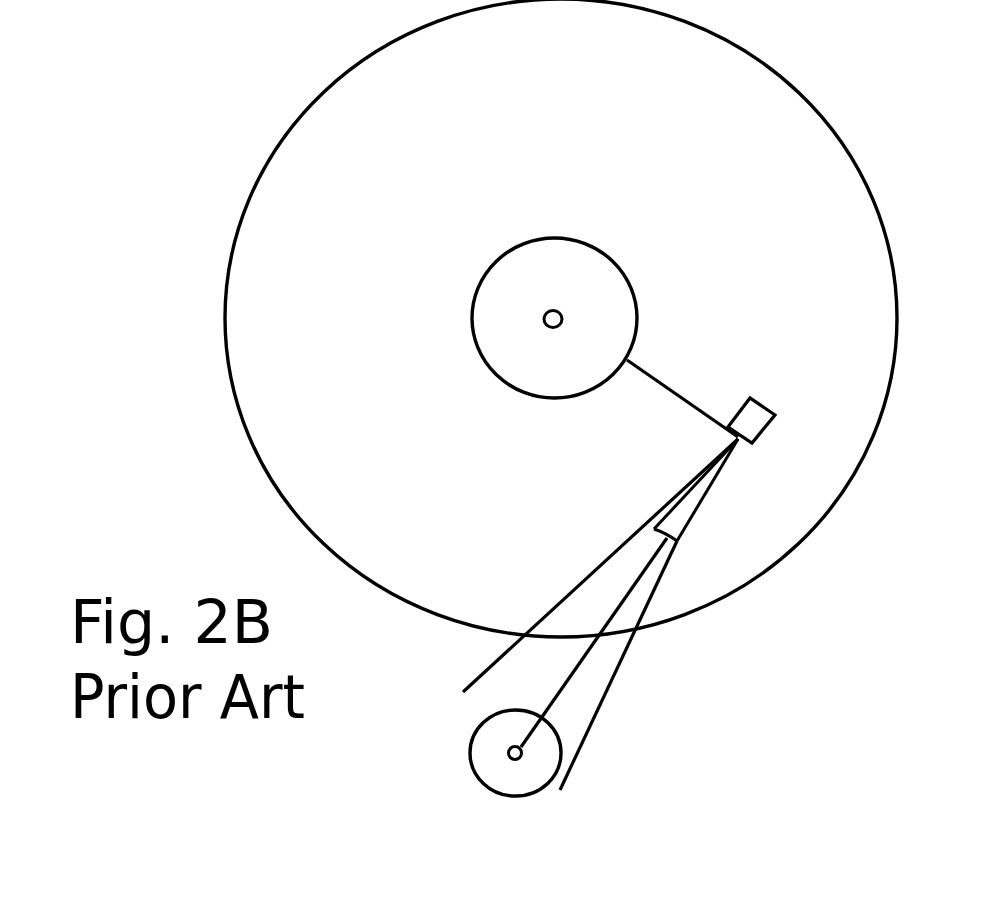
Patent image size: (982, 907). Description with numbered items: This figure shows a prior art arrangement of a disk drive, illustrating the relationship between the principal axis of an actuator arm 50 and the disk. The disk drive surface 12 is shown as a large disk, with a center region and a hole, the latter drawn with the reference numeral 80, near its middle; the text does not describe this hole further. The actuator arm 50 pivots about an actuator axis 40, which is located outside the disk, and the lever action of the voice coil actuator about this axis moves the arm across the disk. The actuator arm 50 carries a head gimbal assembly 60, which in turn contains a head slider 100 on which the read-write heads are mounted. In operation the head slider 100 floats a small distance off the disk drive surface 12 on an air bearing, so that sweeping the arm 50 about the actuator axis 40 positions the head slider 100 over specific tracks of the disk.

The disk drive surface 12 is at (331, 335).
The actuator axis 40 is at (474, 772).
The actuator arm 50 is at (647, 603).
The head gimbal assembly 60 is at (702, 502).
The disc center hole 80 is at (585, 293).
The head slider 100 is at (767, 431).